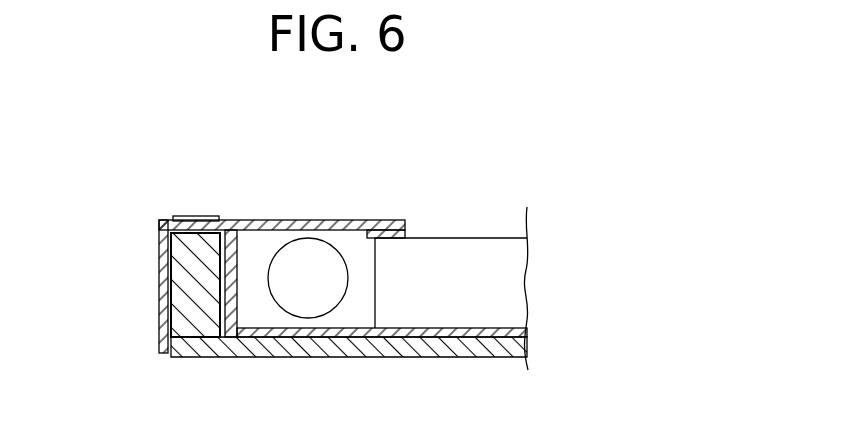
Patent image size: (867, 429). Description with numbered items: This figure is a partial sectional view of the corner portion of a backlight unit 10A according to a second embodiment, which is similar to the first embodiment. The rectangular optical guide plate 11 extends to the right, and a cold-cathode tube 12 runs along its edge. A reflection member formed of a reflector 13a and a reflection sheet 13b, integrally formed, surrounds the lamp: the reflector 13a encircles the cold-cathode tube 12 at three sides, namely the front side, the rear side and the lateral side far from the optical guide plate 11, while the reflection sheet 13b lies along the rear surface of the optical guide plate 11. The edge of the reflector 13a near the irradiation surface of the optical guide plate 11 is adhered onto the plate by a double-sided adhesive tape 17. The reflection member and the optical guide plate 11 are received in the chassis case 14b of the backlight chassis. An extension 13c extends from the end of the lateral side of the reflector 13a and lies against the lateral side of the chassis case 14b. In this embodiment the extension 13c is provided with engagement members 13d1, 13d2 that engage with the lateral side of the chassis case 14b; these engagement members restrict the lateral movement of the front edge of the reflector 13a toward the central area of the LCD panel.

The backlight unit 10A is at (508, 160).
The optical guide plate 11 is at (457, 250).
The cold-cathode tube 12 is at (317, 263).
The reflector 13a is at (274, 220).
The reflection sheet 13b is at (452, 338).
The extension 13c is at (222, 282).
The engagement member 13d1 is at (158, 283).
The engagement member 13d2 is at (193, 216).
The chassis case 14b is at (318, 345).
The double-sided adhesive tape 17 is at (392, 239).